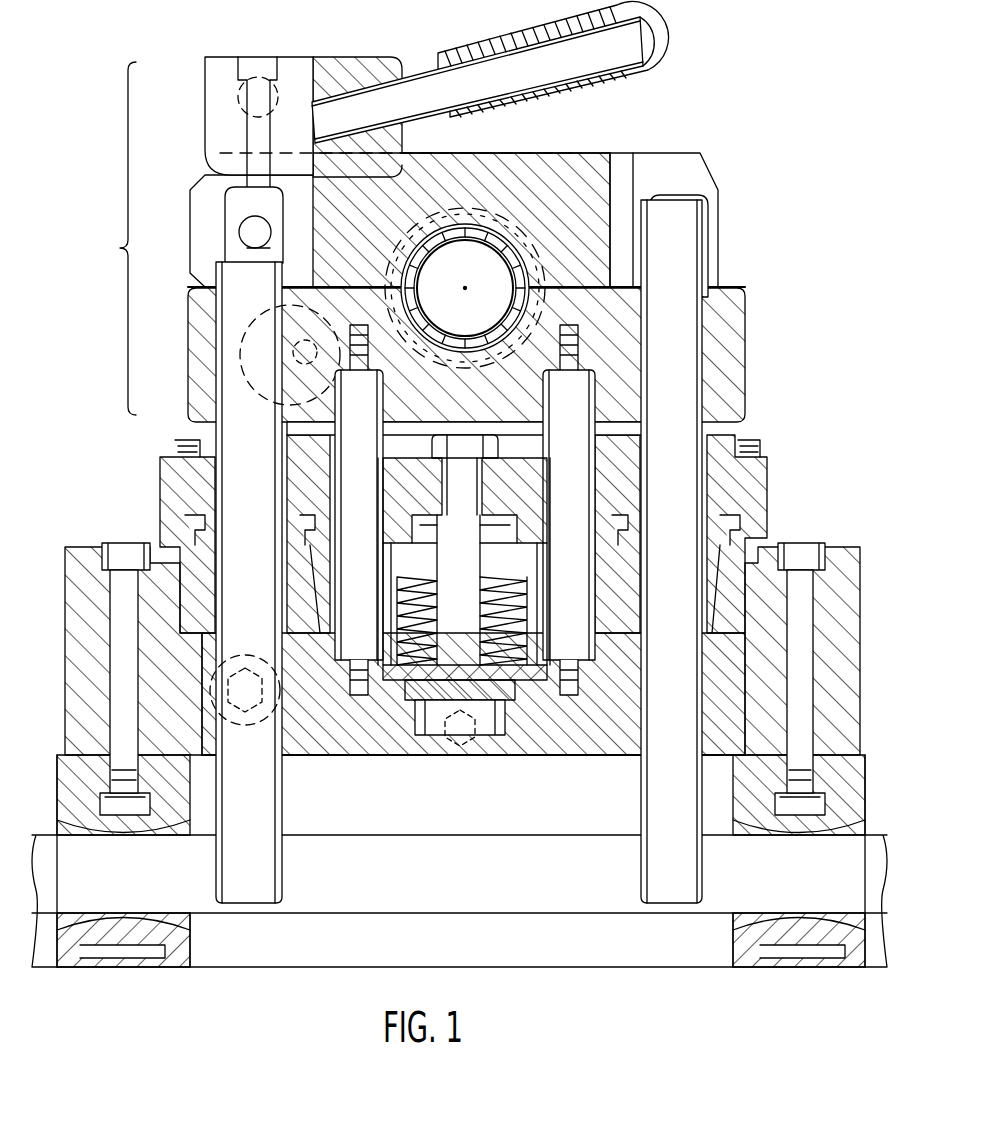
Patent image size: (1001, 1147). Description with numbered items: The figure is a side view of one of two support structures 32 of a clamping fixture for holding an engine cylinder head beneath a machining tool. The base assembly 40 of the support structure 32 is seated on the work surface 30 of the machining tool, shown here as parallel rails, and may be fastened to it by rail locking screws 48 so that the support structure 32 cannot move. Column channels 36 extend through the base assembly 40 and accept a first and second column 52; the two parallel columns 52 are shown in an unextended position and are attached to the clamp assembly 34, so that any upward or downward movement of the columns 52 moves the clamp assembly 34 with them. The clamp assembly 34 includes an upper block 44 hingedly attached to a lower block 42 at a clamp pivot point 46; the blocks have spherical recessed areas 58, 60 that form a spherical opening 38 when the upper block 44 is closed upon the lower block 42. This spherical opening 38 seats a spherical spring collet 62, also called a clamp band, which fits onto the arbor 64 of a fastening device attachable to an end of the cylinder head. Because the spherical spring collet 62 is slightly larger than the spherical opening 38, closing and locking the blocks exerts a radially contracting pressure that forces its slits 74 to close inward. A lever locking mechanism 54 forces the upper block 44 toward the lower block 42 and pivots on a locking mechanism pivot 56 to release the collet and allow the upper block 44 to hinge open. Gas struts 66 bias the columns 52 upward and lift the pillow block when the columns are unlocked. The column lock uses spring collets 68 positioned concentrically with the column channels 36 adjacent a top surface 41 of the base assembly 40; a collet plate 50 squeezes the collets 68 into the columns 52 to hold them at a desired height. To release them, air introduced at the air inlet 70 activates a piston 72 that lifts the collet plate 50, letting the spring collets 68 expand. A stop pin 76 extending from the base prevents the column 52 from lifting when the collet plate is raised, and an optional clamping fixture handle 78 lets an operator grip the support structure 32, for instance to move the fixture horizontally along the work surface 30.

The work surface 30 is at (552, 835).
The support structure 32 is at (743, 252).
The clamp assembly 34 is at (110, 238).
The column channels 36 is at (205, 718).
The spherical opening 38 is at (544, 300).
The base assembly 40 is at (70, 602).
The top surface 41 is at (96, 548).
The lower block 42 is at (746, 323).
The upper block 44 is at (707, 165).
The clamp pivot point 46 is at (693, 229).
The rail locking screws 48 is at (803, 597).
The collet plate 50 is at (768, 467).
The columns 52 is at (268, 788).
The locking mechanism 54 is at (623, 67).
The locking mechanism pivot 56 is at (241, 226).
The spherical recessed area 58 is at (520, 220).
The spherical recessed area 60 is at (462, 368).
The spherical spring collet 62 is at (468, 210).
The arbor 64 is at (489, 265).
The gas struts 66 is at (574, 412).
The spring collets 68 is at (208, 515).
The air inlet 70 is at (473, 742).
The piston 72 is at (403, 657).
The slits 74 is at (531, 268).
The stop pin 76 is at (253, 652).
The clamping fixture handle 78 is at (242, 338).